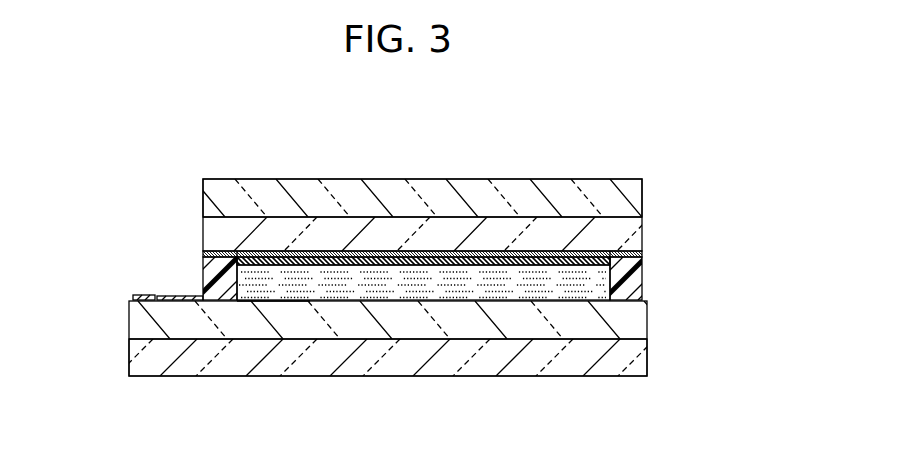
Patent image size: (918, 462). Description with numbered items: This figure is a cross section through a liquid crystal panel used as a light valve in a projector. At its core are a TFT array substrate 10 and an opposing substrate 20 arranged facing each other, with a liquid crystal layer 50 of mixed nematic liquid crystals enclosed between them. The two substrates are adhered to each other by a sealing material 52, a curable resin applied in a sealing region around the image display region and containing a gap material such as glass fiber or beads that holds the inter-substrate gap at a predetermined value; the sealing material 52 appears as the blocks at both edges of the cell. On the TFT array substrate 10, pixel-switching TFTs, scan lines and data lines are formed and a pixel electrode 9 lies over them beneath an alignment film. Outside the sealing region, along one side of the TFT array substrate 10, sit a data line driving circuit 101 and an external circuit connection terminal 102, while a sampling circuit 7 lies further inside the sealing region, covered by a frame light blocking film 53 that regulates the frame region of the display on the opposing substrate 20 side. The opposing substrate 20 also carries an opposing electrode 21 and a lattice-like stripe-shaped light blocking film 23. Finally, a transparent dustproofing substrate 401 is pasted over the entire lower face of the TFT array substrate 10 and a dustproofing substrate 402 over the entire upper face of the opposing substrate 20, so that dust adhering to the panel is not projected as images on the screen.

The sampling circuit 7 is at (253, 301).
The pixel electrode 9 is at (289, 301).
The TFT array substrate 10 is at (468, 330).
The opposing substrate 20 is at (344, 228).
The opposing electrode 21 is at (537, 257).
The light blocking film 23 is at (412, 251).
The liquid crystal layer 50 is at (367, 283).
The sealing material 52 is at (203, 258).
The frame light blocking film 53 is at (252, 257).
The data line driving circuit 101 is at (178, 296).
The external circuit connection terminal 102 is at (136, 295).
The dustproofing substrate 401 is at (580, 363).
The dustproofing substrate 402 is at (486, 197).